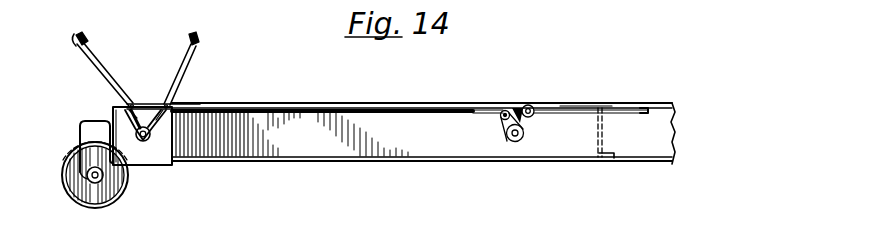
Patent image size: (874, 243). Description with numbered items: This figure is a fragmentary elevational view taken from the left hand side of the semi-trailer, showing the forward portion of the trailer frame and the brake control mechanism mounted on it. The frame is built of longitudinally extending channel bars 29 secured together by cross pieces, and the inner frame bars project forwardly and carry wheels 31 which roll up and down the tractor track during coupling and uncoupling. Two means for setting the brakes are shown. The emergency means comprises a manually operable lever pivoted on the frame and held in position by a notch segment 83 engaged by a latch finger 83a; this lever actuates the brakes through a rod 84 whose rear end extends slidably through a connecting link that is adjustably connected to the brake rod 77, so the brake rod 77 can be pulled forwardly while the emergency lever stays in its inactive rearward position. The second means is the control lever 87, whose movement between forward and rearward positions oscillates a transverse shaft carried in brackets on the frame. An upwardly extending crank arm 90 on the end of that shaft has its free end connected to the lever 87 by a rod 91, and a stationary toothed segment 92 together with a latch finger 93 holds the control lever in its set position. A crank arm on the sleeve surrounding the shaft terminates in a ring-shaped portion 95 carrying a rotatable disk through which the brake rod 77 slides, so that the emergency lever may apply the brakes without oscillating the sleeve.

The channel bars 29 is at (394, 134).
The wheels 31 is at (101, 204).
The brake rod 77 is at (641, 108).
The notch segment 83 is at (200, 41).
The latch finger 83a is at (152, 109).
The rod 84 is at (463, 102).
The lever 87 is at (80, 50).
The crank arm 90 is at (503, 118).
The rod 91 is at (466, 114).
The stationary toothed segment 92 is at (136, 138).
The latch finger 93 is at (128, 113).
The ring-shaped portion 95 is at (531, 120).